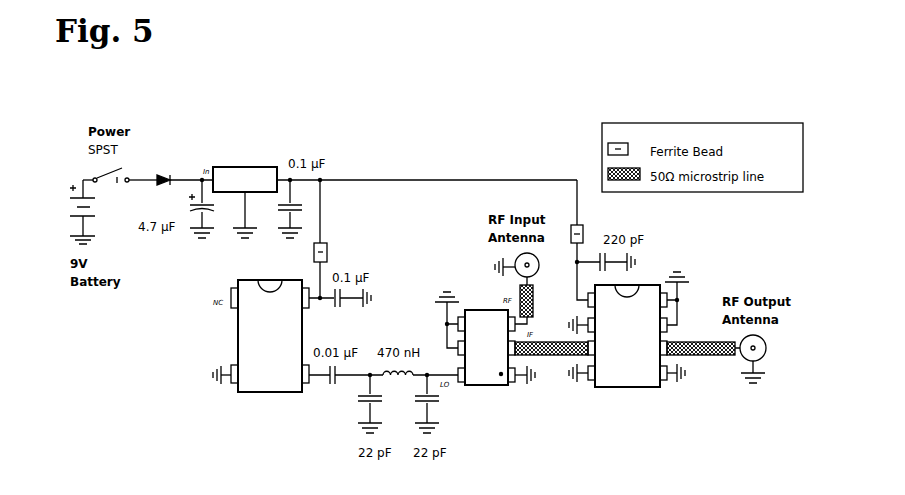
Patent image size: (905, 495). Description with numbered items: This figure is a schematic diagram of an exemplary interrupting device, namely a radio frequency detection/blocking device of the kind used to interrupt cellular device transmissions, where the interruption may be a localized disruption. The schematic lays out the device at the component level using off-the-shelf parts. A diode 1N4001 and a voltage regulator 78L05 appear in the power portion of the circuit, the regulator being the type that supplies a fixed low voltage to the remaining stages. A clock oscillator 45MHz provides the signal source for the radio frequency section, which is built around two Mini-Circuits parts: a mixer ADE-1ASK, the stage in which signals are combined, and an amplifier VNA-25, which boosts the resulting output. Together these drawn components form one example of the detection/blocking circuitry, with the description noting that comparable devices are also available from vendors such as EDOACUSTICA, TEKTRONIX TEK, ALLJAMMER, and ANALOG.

The 1N4001 diode 1N4001 is at (178, 164).
The 78L05 voltage regulator 78L05 is at (245, 202).
The 45 MHz clock oscillator 45MHz is at (270, 368).
The Mini-Circuits ADE-1ASK mixer ADE-1ASK is at (503, 372).
The Mini-Circuits VNA-25 amplifier VNA-25 is at (634, 359).